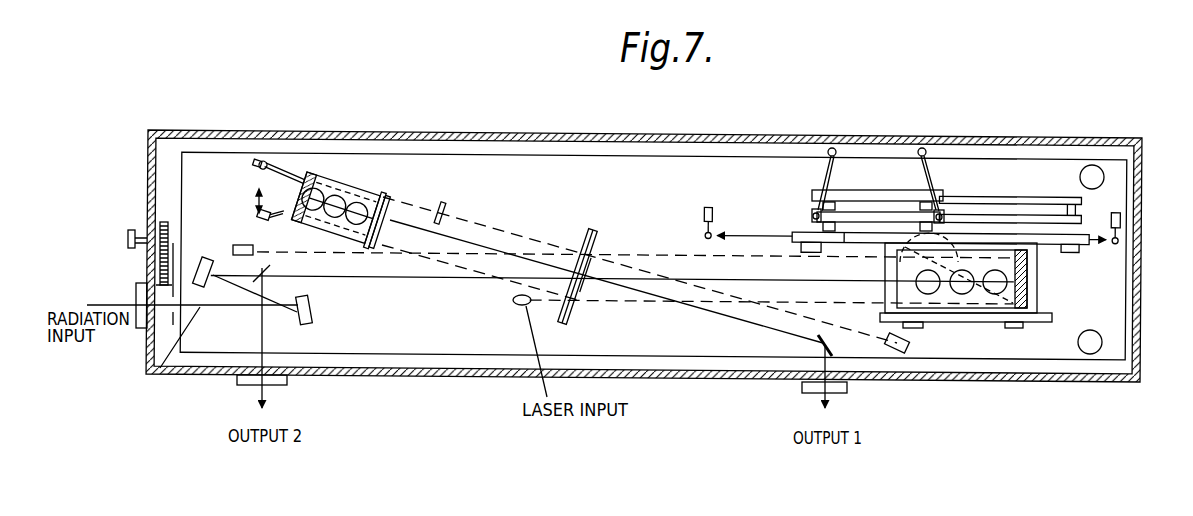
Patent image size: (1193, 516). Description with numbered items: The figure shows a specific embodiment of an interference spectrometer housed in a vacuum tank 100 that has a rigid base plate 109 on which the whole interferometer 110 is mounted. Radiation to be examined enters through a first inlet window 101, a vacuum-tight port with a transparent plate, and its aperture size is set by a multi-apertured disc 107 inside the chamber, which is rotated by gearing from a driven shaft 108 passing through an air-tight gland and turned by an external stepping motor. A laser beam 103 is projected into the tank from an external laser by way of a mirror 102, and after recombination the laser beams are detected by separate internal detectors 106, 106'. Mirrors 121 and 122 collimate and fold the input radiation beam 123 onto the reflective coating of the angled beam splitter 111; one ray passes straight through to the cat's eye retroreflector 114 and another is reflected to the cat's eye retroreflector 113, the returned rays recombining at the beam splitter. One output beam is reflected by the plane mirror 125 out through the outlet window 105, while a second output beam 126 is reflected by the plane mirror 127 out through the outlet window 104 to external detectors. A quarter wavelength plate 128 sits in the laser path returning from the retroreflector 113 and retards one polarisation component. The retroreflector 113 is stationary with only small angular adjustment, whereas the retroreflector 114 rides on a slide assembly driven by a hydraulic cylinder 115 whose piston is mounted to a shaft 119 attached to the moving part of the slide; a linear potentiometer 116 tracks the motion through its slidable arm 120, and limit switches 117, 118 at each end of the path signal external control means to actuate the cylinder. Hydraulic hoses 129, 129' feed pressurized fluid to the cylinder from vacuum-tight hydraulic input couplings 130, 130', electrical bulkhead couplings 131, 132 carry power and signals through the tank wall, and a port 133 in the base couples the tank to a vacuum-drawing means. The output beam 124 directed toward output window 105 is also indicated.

The vacuum tank 100 is at (214, 129).
The first inlet window 101 is at (136, 292).
The mirror 102 is at (514, 305).
The laser beam 103 is at (633, 303).
The first outlet window 104 is at (847, 393).
The second outlet window 105 is at (287, 382).
The internal detector 106 is at (676, 310).
The internal detector 106' is at (547, 209).
The multi-apertured disc 107 is at (147, 345).
The driven shaft 108 is at (133, 249).
The base plate 109 is at (516, 154).
The interferometer 110 is at (576, 201).
The beam splitter 111 is at (598, 228).
The cat's eye retroreflector 113 is at (350, 186).
The cat's eye retroreflector 114 is at (1023, 293).
The hydraulic cylinder 115 is at (877, 212).
The linear potentiometer 116 is at (942, 192).
The limit switch 117 is at (707, 206).
The limit switch 118 is at (1124, 218).
The shaft 119 is at (1043, 214).
The slidable arm 120 is at (1047, 196).
The mirror 121 is at (312, 316).
The mirror 122 is at (208, 258).
The input radiation beam 123 is at (172, 320).
The output beam 2 124 is at (260, 333).
The plane mirror 125 is at (272, 272).
The second output beam 126 is at (720, 320).
The plane mirror 127 is at (823, 338).
The quarter wavelength plate 128 is at (440, 202).
The hydraulic hose 129 is at (793, 155).
The hydraulic hose 129' is at (970, 155).
The hydraulic input coupling 130 is at (828, 127).
The hydraulic input coupling 130' is at (934, 127).
The electrical bulkhead coupling 131 is at (1095, 165).
The electrical bulkhead coupling 132 is at (1087, 347).
The port 133 is at (948, 245).